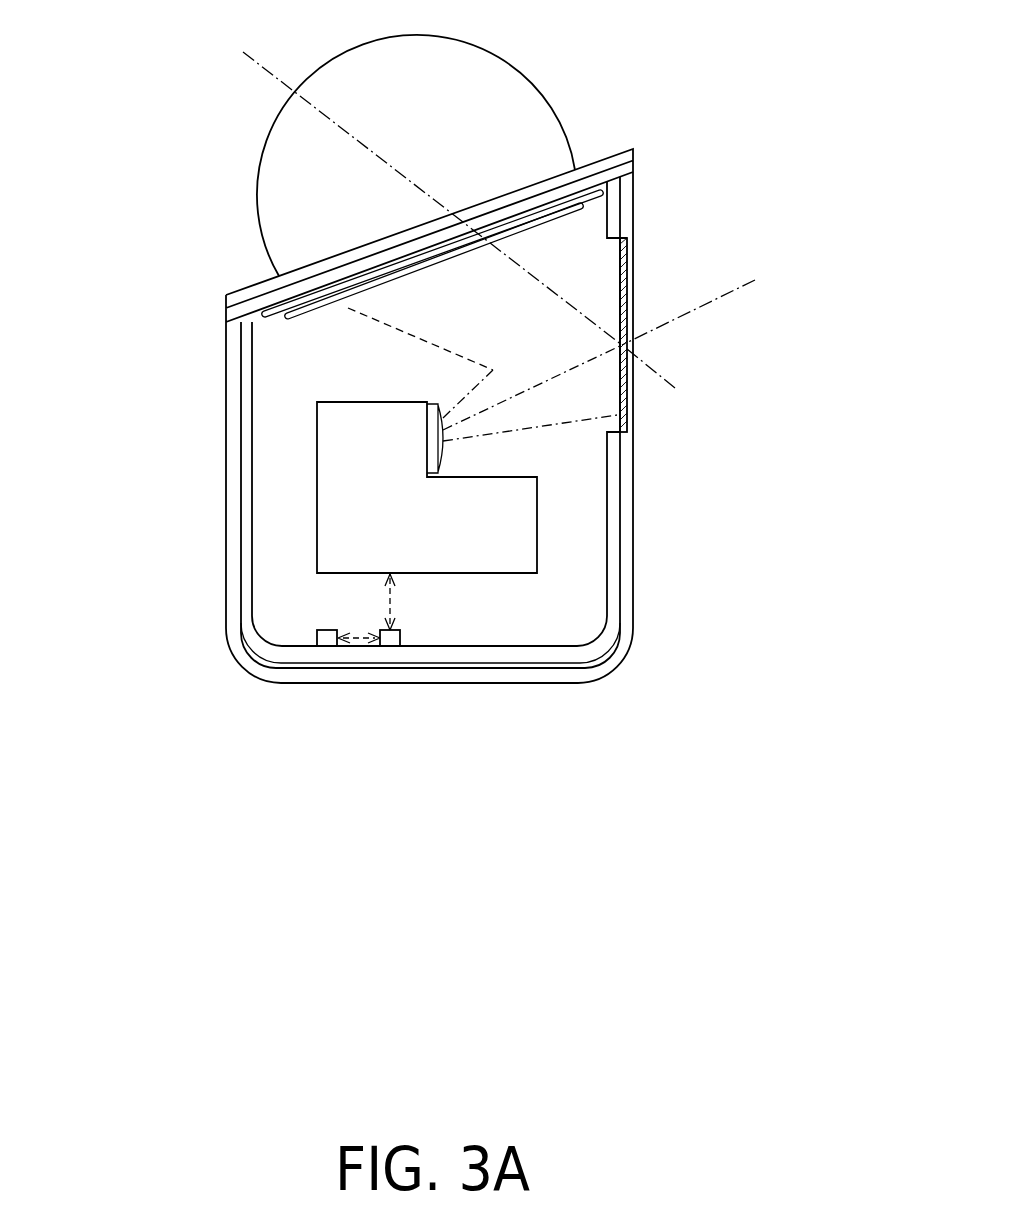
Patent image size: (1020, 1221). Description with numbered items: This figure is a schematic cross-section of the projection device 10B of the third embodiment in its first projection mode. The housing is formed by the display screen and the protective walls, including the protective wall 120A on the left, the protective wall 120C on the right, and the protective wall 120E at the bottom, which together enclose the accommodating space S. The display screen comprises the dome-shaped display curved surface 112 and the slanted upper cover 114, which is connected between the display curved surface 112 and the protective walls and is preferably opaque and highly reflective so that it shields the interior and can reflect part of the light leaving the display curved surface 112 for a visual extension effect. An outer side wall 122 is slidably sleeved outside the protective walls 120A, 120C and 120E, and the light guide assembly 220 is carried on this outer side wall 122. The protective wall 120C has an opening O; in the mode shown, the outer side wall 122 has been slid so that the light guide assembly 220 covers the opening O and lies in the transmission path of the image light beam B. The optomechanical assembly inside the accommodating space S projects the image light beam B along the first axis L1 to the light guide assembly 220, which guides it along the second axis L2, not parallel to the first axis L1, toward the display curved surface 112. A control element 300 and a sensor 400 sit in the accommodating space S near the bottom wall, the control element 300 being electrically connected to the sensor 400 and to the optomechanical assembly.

The display curved surface 112 is at (295, 213).
The upper cover 114 is at (238, 297).
The protective wall 120A is at (245, 525).
The protective wall 120C is at (622, 527).
The protective wall 120E is at (513, 650).
The outer side wall 122 is at (613, 657).
The light guide assembly 220 is at (632, 345).
The control element 300 is at (392, 650).
The sensor 400 is at (328, 650).
The projection device 10B is at (732, 999).
The accommodating space S is at (272, 383).
The first axis L1 is at (688, 312).
The second axis L2 is at (273, 80).
The opening O is at (628, 253).
The image light beam B is at (563, 428).